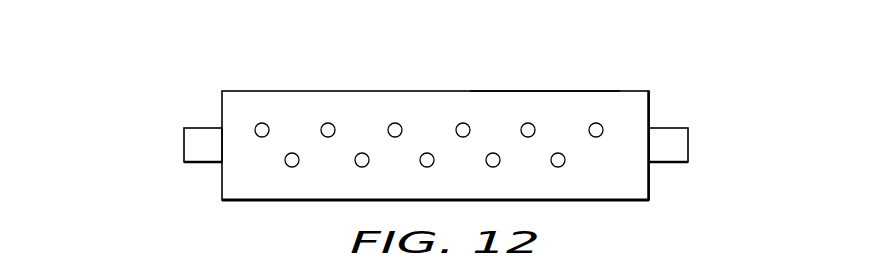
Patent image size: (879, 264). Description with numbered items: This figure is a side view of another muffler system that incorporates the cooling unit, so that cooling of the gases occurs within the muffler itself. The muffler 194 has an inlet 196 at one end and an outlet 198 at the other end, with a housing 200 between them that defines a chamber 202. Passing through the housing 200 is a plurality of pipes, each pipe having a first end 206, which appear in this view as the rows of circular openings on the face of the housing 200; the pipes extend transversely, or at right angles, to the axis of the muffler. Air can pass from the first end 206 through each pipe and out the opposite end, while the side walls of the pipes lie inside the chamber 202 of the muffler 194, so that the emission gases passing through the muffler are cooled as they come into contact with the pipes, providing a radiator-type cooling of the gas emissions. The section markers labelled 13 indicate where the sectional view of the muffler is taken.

The muffler 194 is at (302, 100).
The inlet 196 is at (195, 164).
The outlet 198 is at (688, 162).
The housing 200 is at (503, 91).
The chamber 202 is at (572, 108).
The first end 206 is at (396, 124).
The section line 13- 13 is at (134, 142).